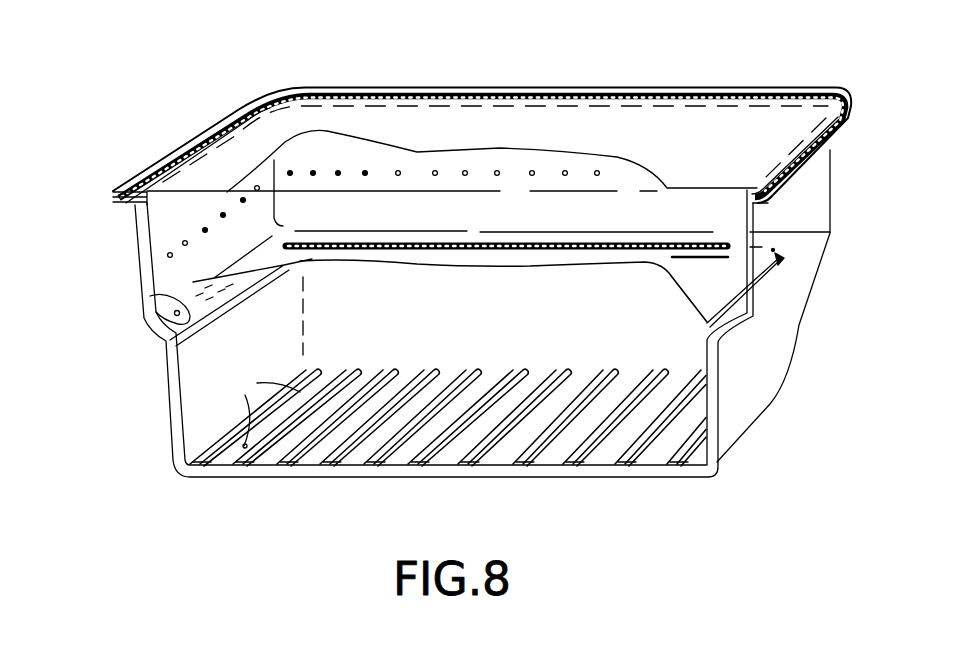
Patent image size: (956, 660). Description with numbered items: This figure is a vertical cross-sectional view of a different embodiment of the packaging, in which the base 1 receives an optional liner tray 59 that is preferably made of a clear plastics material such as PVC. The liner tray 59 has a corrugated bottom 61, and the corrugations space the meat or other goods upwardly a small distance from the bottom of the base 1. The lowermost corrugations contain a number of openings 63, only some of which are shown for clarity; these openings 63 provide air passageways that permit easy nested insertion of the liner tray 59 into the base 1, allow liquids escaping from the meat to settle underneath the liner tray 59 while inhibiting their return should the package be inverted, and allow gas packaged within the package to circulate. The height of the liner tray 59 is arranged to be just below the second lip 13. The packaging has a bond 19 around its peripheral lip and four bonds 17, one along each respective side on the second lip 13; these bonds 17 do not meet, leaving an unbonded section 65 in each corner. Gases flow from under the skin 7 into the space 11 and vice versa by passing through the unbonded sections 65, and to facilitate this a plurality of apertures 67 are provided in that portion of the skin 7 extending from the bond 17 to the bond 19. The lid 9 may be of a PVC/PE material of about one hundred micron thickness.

The base 1 is at (720, 395).
The skin 7 is at (668, 277).
The lid 9 is at (695, 137).
The space 11 is at (313, 215).
The second lip 13 is at (150, 328).
The bonds 17 is at (168, 313).
The bond 19 is at (600, 88).
The liner tray 59 is at (573, 467).
The corrugated bottom 61 is at (463, 470).
The openings 63 is at (250, 406).
The unbonded section 65 is at (272, 240).
The apertures 67 is at (532, 172).